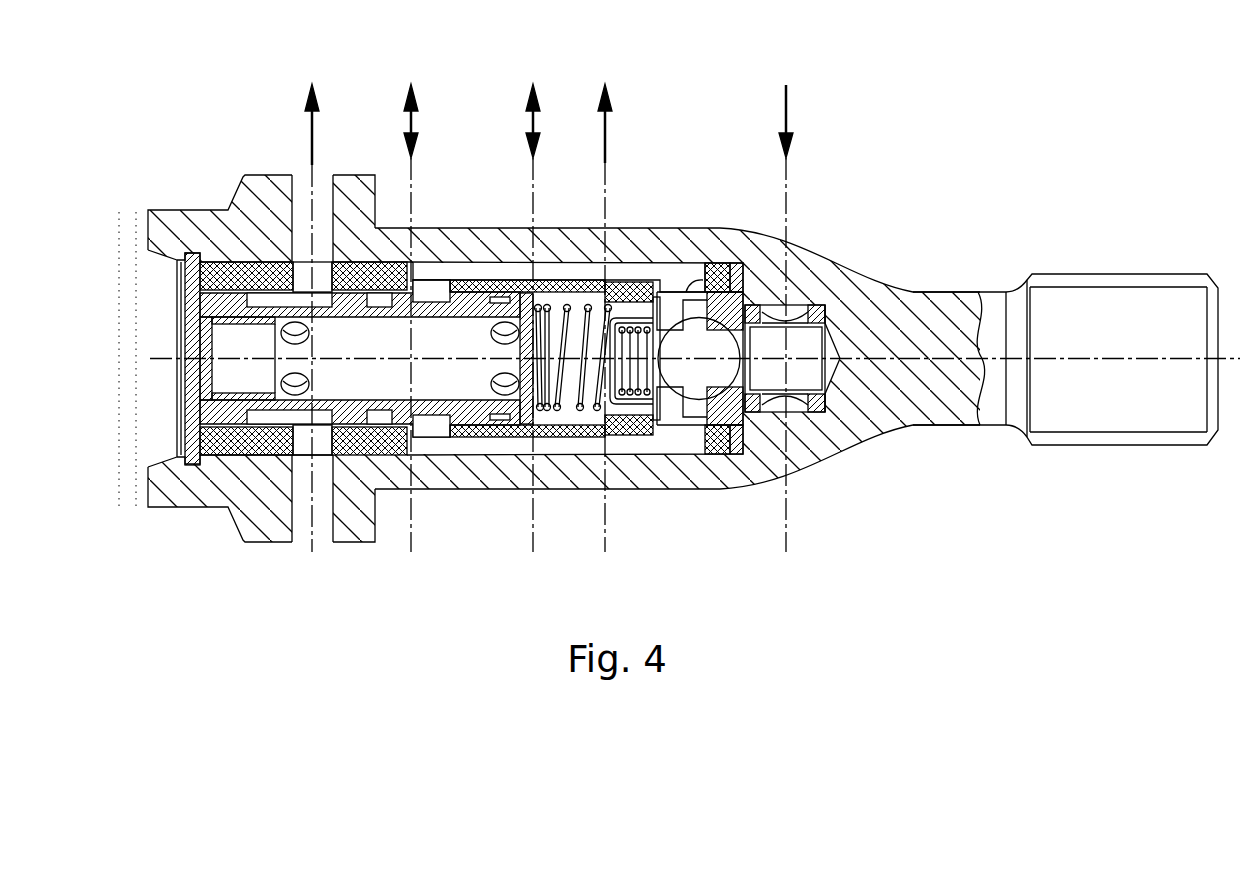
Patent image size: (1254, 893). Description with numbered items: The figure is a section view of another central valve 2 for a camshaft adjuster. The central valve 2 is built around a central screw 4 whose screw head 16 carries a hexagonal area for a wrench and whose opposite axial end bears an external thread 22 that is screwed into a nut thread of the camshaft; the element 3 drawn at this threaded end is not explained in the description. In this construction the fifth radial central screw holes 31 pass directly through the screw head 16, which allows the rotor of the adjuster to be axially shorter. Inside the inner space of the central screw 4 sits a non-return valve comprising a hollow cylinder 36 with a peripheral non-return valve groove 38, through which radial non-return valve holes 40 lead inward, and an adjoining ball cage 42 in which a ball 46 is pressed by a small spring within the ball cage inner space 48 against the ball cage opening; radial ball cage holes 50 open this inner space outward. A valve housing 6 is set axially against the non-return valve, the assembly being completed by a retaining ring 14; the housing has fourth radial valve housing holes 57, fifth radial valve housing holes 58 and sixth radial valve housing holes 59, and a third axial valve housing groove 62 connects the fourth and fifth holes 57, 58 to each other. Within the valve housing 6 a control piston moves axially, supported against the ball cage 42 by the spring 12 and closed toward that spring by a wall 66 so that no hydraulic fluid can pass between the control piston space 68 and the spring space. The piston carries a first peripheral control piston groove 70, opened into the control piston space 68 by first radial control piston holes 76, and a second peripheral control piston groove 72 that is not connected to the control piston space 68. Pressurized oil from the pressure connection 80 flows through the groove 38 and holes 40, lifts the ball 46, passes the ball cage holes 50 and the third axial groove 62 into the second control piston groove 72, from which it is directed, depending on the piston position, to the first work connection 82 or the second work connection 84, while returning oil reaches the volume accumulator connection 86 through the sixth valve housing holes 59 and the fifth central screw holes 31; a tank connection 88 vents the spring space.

The central valve 2 is at (1029, 72).
The longitudinal axis 3 is at (1157, 362).
The central screw 4 is at (723, 473).
The valve housing 6 is at (355, 518).
The spring 12 is at (577, 403).
The retaining ring 14 is at (162, 279).
The screw head 16 is at (252, 210).
The external thread 22 is at (1102, 273).
The fifth radial central screw holes 31 is at (300, 197).
The hollow cylinder 36 is at (815, 303).
The non-return valve groove 38 is at (762, 308).
The radial non-return valve holes 40 is at (835, 457).
The ball cage 42 is at (790, 407).
The ball 46 is at (696, 385).
The ball cage inner space 48 is at (660, 390).
The radial ball cage holes 50 is at (712, 270).
The fourth radial valve housing holes 57 is at (677, 280).
The fifth radial valve housing holes 58 is at (430, 283).
The sixth radial valve housing holes 59 is at (322, 273).
The third axial valve housing grooves 62 is at (583, 270).
The wall 66 is at (515, 285).
The control piston space 68 is at (473, 393).
The first peripheral control piston groove 70 is at (510, 393).
The second peripheral control piston groove 72 is at (383, 282).
The first radial control piston holes 76 is at (275, 378).
The pressure connection 80 is at (601, 118).
The first work connection 82 is at (529, 118).
The second work connection 84 is at (407, 118).
The volume accumulator connection 86 is at (308, 103).
The tank connection 88 is at (782, 120).